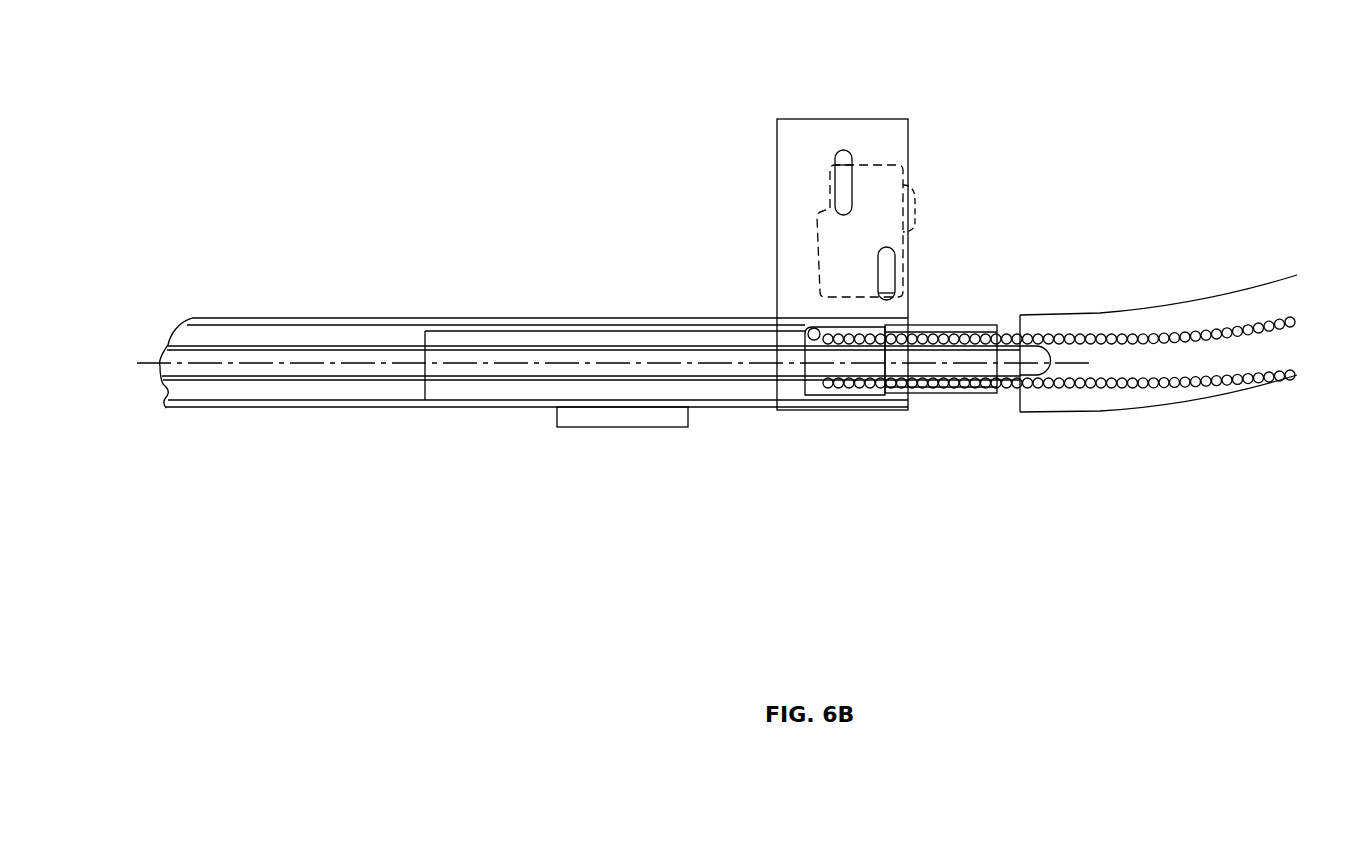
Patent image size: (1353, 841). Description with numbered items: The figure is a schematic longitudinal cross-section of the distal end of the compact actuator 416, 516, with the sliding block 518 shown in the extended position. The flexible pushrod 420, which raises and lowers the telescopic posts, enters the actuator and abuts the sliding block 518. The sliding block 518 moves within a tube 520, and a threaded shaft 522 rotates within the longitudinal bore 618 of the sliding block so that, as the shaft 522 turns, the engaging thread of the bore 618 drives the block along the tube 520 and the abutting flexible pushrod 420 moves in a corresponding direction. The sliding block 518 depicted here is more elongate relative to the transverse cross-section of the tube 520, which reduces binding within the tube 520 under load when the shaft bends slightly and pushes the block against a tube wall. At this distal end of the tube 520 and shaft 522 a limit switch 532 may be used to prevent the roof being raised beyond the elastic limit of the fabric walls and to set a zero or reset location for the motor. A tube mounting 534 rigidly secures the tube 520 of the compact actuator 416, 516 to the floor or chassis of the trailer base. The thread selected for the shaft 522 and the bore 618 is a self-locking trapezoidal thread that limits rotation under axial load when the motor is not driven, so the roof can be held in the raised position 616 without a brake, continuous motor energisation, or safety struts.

The compact actuator 416 is at (275, 662).
The lower compact actuator 516 is at (448, 587).
The flexible pushrod 420 is at (1097, 335).
The sliding block 518 is at (613, 425).
The raised position 616 is at (510, 390).
The tube 520 is at (703, 317).
The threaded shaft 522 is at (945, 365).
The limit switch 532 is at (863, 215).
The tube mountings 534 is at (604, 428).
The longitudinal bore 618 is at (424, 343).